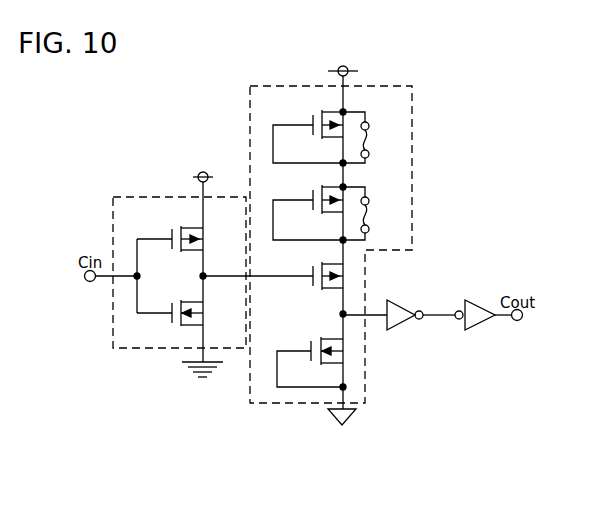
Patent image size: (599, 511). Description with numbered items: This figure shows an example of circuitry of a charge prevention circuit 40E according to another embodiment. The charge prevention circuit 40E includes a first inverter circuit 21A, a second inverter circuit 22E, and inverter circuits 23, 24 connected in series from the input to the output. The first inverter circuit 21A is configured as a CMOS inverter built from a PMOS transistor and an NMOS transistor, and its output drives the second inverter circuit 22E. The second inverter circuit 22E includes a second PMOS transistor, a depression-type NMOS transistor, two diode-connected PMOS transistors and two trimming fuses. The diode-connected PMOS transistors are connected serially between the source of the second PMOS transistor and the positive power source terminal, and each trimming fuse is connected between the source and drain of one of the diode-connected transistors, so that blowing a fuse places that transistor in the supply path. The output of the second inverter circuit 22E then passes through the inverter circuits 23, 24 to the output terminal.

The first inverter circuit 21A is at (158, 197).
The second inverter circuit 22E is at (296, 84).
The charge prevention circuit 40E is at (448, 120).
The inverter circuit 23 is at (400, 306).
The inverter circuit 24 is at (480, 306).